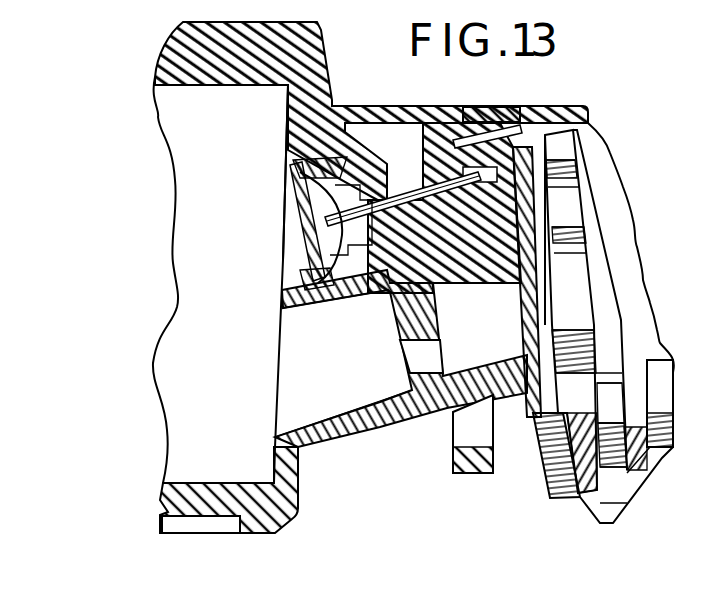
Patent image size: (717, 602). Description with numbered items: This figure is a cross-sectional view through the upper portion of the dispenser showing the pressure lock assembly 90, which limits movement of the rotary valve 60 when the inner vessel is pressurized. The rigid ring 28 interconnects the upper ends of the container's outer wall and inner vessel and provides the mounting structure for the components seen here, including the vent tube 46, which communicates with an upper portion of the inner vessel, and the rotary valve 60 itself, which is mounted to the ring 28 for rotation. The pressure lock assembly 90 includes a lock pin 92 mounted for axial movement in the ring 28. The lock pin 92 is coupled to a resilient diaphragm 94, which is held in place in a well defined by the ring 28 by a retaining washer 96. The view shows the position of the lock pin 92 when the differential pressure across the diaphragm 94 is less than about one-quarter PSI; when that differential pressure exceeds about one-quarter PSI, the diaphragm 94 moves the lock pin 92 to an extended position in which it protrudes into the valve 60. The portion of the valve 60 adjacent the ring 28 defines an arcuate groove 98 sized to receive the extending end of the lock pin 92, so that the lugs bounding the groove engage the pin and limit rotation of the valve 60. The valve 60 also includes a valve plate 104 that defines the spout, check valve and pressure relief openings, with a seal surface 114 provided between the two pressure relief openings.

The rigid ring 28 is at (287, 128).
The pressure lock assembly 90 is at (273, 208).
The lock pin 92 is at (400, 190).
The resilient diaphragm 94 is at (300, 225).
The retaining washer 96 is at (300, 273).
The arcuate groove 98 is at (507, 163).
The seal surface 114 is at (500, 320).
The vent tube 46 is at (298, 400).
The valve plate 104 is at (517, 312).
The rotary valve 60 is at (542, 467).